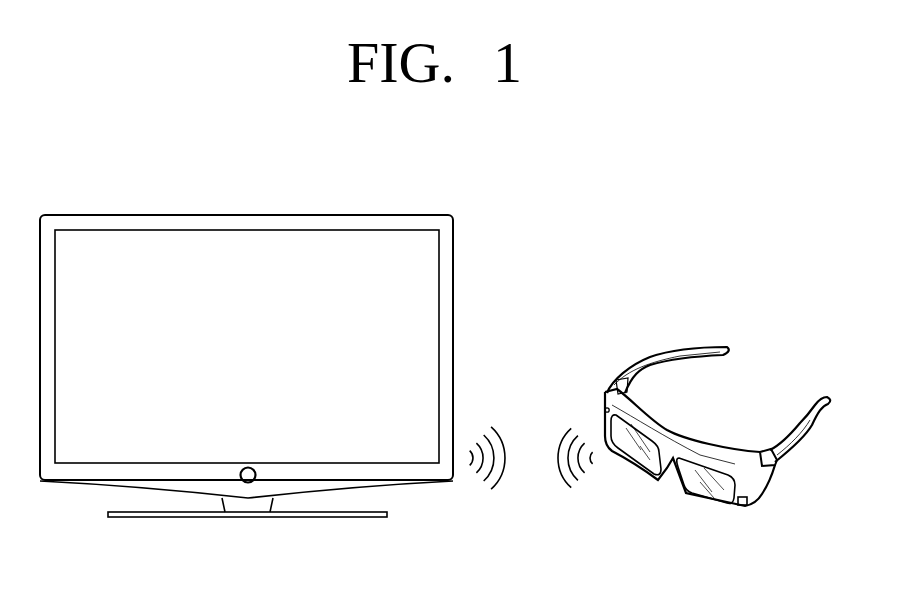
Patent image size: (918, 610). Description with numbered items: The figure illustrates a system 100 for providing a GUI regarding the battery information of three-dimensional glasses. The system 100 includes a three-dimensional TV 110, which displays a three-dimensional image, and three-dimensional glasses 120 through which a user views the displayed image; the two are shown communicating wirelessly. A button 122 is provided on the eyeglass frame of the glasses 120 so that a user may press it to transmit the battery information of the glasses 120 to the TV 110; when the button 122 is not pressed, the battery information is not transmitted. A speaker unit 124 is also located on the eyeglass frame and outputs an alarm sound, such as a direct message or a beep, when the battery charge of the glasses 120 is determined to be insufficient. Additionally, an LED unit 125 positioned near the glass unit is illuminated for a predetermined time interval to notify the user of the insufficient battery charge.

The system 100 is at (450, 147).
The 3D TV 110 is at (206, 213).
The 3D glasses 120 is at (698, 350).
The button 122 is at (602, 405).
The speaker unit 124 is at (783, 468).
The LED unit 125 is at (741, 507).